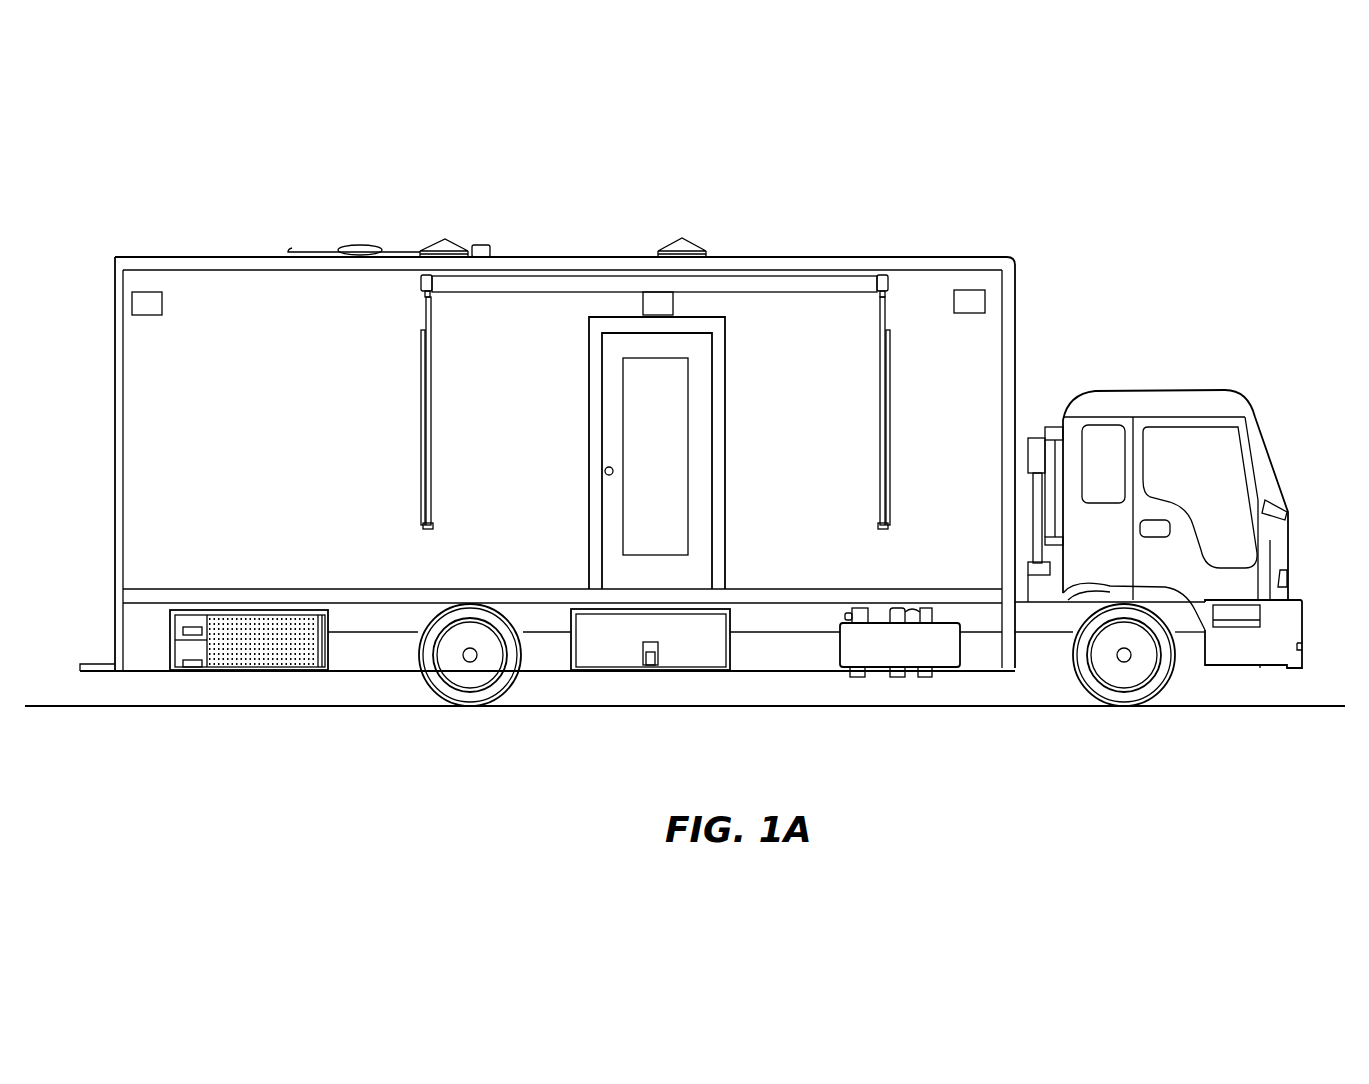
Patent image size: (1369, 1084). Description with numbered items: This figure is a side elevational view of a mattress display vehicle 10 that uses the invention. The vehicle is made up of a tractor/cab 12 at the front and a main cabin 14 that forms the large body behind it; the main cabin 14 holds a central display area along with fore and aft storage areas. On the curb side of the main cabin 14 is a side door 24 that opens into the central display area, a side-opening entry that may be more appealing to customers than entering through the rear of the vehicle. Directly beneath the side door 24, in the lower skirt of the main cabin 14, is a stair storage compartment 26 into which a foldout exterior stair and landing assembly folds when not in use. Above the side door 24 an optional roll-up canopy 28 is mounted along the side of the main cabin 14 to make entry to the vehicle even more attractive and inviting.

The mattress display vehicle 10 is at (691, 486).
The tractor/cab 12 is at (1184, 405).
The main cabin 14 is at (922, 283).
The side door 24 is at (693, 343).
The stair storage compartment 26 is at (700, 650).
The roll-up canopy 28 is at (822, 280).